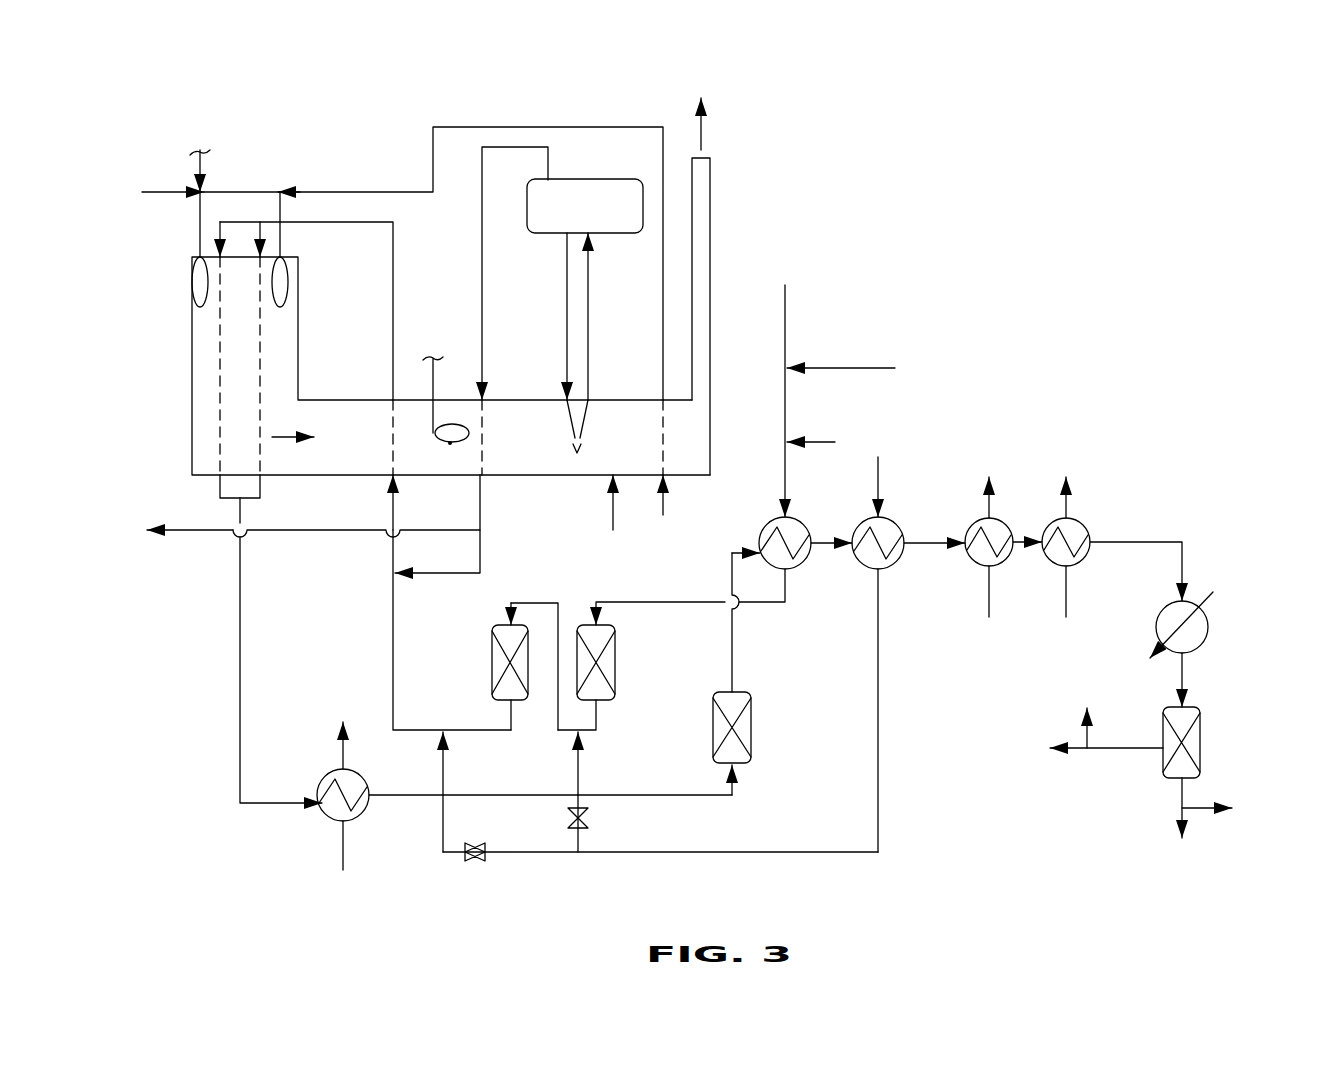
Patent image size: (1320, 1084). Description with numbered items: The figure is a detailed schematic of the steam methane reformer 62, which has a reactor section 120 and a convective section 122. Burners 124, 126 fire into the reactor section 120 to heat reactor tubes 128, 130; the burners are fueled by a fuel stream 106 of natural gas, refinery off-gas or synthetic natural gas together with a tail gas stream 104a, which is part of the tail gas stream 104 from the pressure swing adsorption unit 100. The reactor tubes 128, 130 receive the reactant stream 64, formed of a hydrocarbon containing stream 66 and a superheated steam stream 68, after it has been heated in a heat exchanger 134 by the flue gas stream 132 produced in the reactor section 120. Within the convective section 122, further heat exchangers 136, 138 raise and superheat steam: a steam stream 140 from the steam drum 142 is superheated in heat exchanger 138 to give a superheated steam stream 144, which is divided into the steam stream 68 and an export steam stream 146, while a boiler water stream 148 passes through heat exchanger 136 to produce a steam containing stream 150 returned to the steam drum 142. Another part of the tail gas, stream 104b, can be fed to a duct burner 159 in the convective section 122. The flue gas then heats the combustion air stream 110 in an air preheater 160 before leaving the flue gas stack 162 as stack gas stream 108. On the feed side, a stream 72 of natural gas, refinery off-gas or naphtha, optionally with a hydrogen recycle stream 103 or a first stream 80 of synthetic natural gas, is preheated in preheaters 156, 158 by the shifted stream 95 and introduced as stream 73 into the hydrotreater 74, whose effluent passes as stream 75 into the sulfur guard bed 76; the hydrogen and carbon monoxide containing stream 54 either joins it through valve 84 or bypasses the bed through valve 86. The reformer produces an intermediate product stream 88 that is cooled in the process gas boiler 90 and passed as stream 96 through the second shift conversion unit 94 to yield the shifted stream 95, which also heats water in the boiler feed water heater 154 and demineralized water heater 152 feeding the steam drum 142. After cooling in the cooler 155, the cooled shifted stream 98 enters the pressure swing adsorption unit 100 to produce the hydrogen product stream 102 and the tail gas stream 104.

The steam methane reformer 62 is at (378, 140).
The fuel stream 106 is at (160, 190).
The tail gas stream to burners 104a is at (210, 158).
The tail gas stream to duct burner 104b is at (436, 380).
The tail gas stream 104 is at (1120, 752).
The reactor section 120 is at (190, 383).
The burner 124 is at (200, 276).
The burner 126 is at (280, 272).
The reactor tube 128 is at (220, 348).
The reactor tube 130 is at (260, 358).
The flue gas stream 132 is at (284, 440).
The reactant stream 64 is at (393, 283).
The heat exchanger 134 is at (393, 430).
The heat exchanger 138 is at (482, 437).
The duct burner 159 is at (450, 443).
The steam stream 140 is at (482, 292).
The steam drum 142 is at (572, 185).
The boiler water stream 148 is at (567, 353).
The steam containing stream 150 is at (588, 322).
The heat exchanger 136 is at (605, 430).
The stack gas stream 108 is at (701, 133).
The flue gas stack 162 is at (710, 257).
The air preheater 160 is at (663, 448).
The air stream 110 is at (663, 508).
The convective section 122 is at (617, 516).
The superheated steam stream 144 is at (480, 502).
The export steam stream 146 is at (300, 535).
The steam stream 68 is at (433, 578).
The hydrocarbon containing stream 66 is at (393, 655).
The intermediate product stream 88 is at (240, 640).
The process gas boiler 90 is at (330, 812).
The cooled intermediate product stream 96 is at (400, 797).
The sulfur guard bed 76 is at (490, 666).
The hydrotreater 74 is at (612, 660).
The stream to sulfur guard bed 75 is at (556, 710).
The preheated hydrocarbon stream 73 is at (790, 590).
The shifted stream 95 is at (735, 658).
The second shift conversion unit 94 is at (745, 725).
The valve 84 is at (590, 822).
The valve 86 is at (485, 860).
The hydrocarbon feed stream 72 is at (785, 322).
The first stream of synthetic natural gas 80 is at (874, 368).
The hydrogen recycle stream 103 is at (818, 442).
The preheater 156 is at (760, 522).
The hydrogen and carbon monoxide containing stream 54 is at (880, 470).
The preheater 158 is at (890, 533).
The boiler feed water heater 154 is at (997, 527).
The demineralized water heater 152 is at (1075, 527).
The cooler 155 is at (1212, 628).
The cooled shifted stream 98 is at (1185, 670).
The pressure swing adsorption unit 100 is at (1200, 743).
The hydrogen product stream 102 is at (1182, 818).